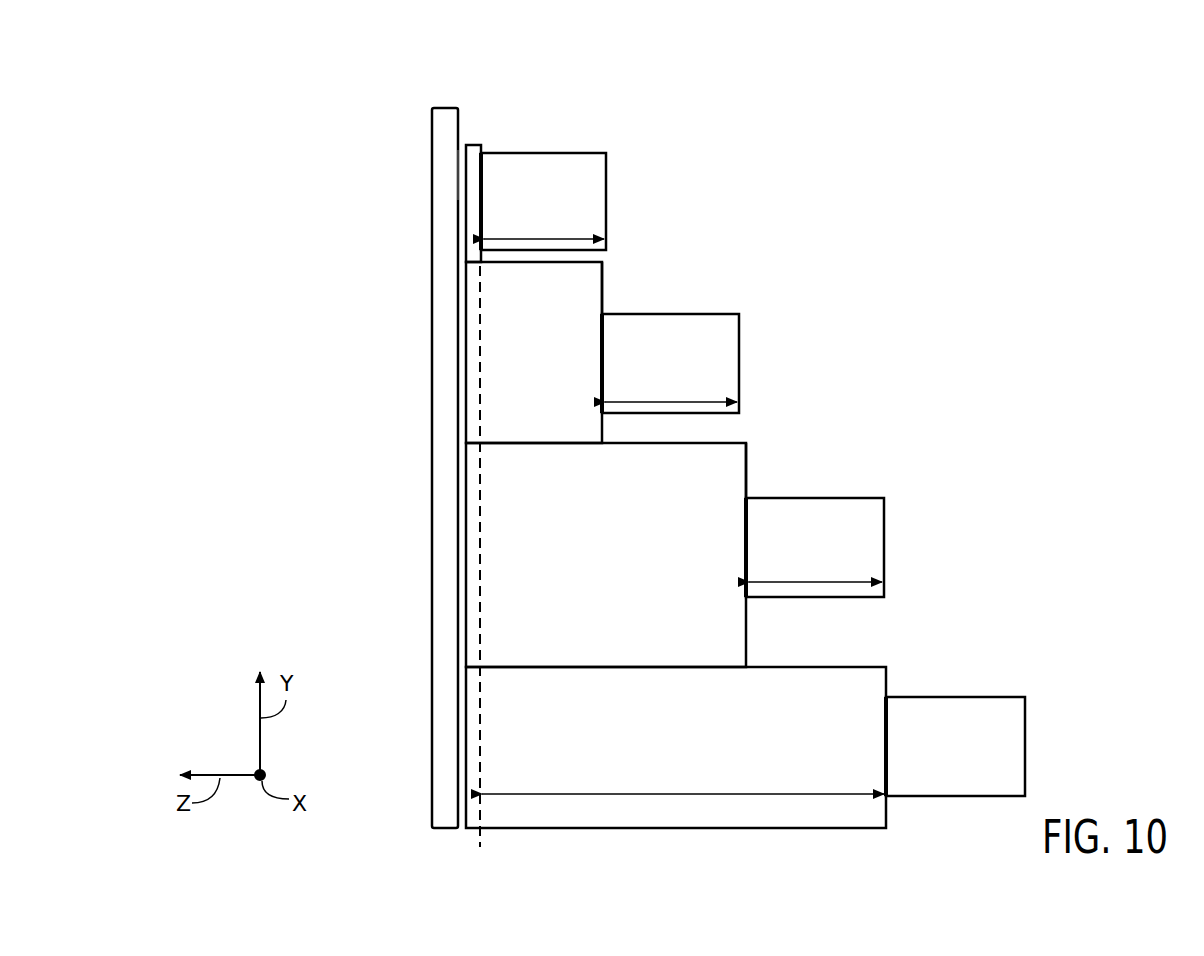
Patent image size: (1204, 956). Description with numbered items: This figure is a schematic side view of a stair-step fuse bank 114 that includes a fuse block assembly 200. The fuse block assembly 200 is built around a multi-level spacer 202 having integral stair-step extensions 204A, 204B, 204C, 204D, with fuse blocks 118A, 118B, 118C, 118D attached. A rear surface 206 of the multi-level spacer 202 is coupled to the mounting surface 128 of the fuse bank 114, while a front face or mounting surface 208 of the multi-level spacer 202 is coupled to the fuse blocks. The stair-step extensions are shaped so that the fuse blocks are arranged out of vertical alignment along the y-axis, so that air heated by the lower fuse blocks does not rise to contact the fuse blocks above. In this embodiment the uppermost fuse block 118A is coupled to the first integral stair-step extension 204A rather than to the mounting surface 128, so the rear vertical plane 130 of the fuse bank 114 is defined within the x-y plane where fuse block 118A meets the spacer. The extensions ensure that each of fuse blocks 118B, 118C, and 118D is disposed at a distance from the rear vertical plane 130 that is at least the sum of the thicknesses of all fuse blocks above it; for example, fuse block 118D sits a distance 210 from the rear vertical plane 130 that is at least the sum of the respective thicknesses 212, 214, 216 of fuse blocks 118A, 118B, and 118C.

The stair-step fuse bank 114 is at (565, 71).
The mounting surface 128 is at (463, 118).
The rear surface 206 is at (464, 175).
The fuse block assembly 200 is at (714, 221).
The multi-level spacer 202 is at (750, 467).
The front face or mounting surface 208 is at (606, 282).
The rear vertical plane 130 is at (482, 764).
The first integral stair-step extension 204A is at (475, 158).
The integral stair-step extension 204B is at (534, 352).
The integral stair-step extension 204C is at (606, 555).
The integral stair-step extension 204D is at (676, 747).
The uppermost fuse block 118A is at (543, 201).
The fuse block 118B is at (670, 363).
The fuse block 118C is at (815, 547).
The fuse block 118D is at (955, 746).
The thickness 212 is at (528, 237).
The thickness 214 is at (665, 400).
The thickness 216 is at (808, 580).
The distance 210 is at (682, 793).